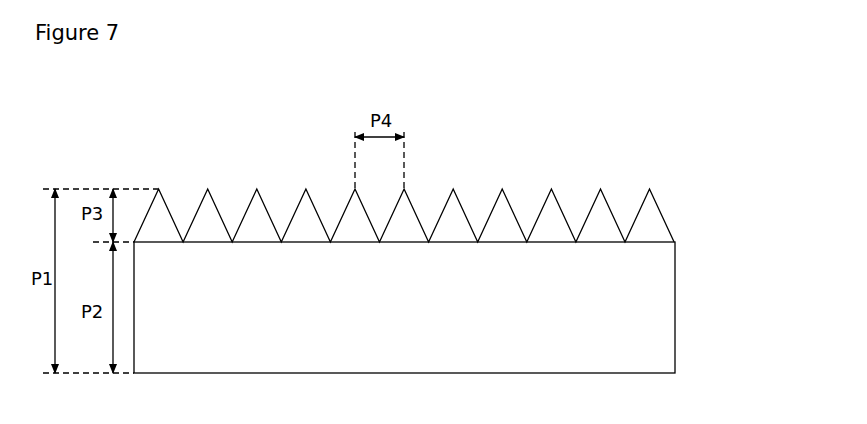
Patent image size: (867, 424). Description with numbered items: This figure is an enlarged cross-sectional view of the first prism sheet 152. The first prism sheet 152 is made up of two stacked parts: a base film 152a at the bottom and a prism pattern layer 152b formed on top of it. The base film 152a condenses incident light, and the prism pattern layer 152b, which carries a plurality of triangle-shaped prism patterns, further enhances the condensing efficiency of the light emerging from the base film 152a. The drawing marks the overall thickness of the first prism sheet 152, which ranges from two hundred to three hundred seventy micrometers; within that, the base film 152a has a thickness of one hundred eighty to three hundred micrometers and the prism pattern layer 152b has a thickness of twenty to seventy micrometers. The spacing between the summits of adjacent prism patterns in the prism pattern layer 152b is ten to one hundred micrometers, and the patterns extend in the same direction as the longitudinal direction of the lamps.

The first prism sheet 152 is at (470, 281).
The base film 152a is at (672, 308).
The prism pattern layer 152b is at (657, 221).